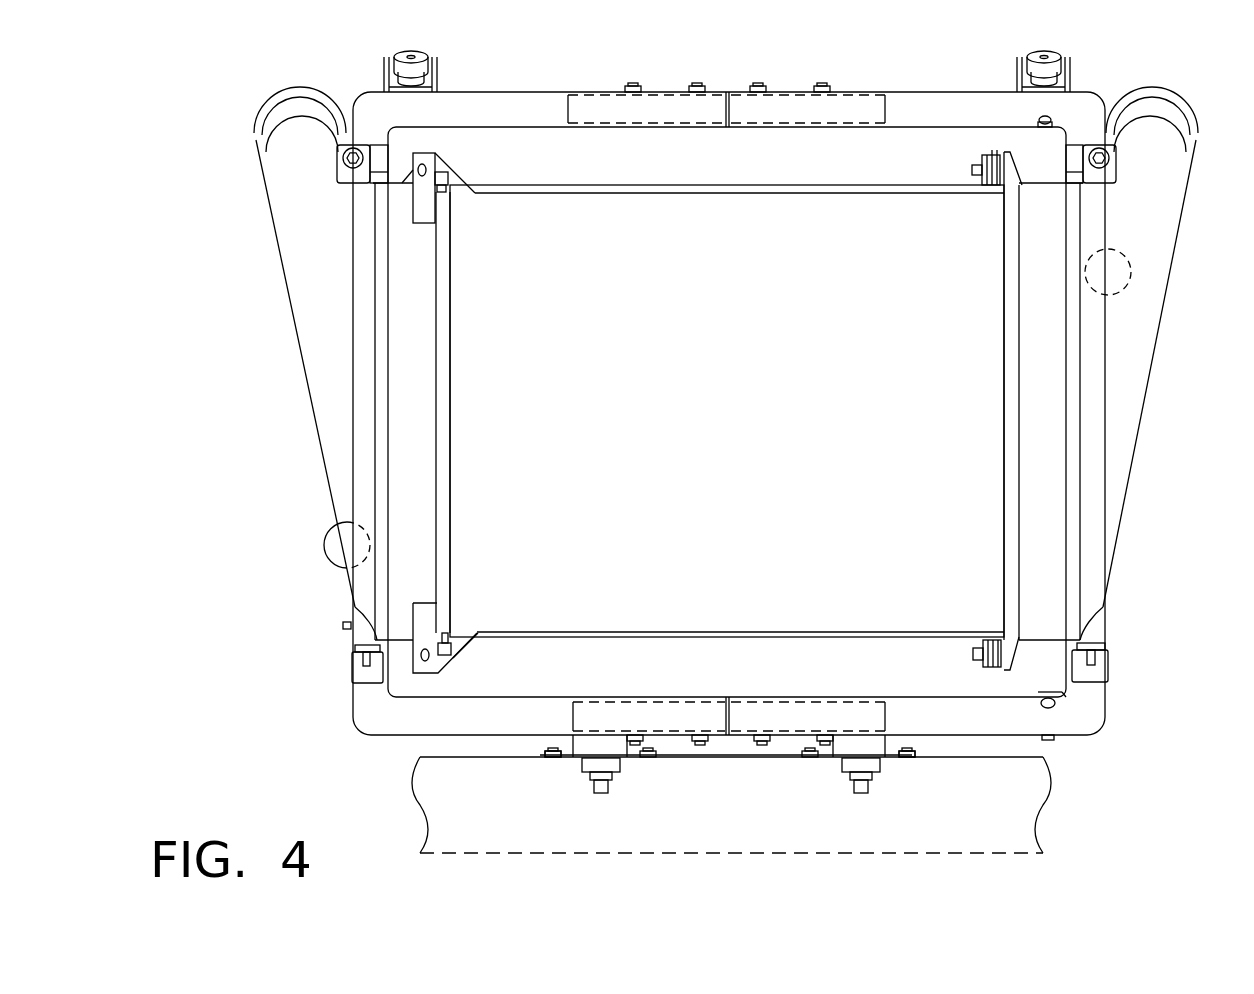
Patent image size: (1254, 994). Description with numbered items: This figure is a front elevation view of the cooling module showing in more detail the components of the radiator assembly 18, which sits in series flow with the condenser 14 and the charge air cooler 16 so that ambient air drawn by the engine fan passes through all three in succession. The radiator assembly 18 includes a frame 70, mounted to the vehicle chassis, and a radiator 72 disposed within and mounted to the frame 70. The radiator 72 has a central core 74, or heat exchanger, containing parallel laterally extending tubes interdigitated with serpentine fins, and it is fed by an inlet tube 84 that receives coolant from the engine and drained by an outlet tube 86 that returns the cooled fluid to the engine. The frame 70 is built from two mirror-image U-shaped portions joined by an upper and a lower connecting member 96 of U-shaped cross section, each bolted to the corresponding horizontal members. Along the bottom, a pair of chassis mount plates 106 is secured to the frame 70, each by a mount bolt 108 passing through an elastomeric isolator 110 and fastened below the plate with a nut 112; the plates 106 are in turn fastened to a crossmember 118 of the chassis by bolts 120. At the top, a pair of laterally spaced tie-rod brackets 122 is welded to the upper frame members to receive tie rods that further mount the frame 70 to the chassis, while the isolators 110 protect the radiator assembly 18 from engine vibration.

The condenser 14 is at (1022, 462).
The charge air cooler 16 is at (1143, 415).
The radiator assembly 18 is at (985, 88).
The frame 70 is at (485, 92).
The radiator 72 is at (796, 138).
The central core 74 is at (676, 230).
The inlet tube 84 is at (1122, 250).
The outlet tube 86 is at (325, 560).
The connecting members 96 is at (596, 88).
The chassis mount plates 106 is at (562, 757).
The mount bolt 108 is at (600, 793).
The elastomeric isolator 110 is at (616, 765).
The nut 112 is at (590, 780).
The crossmember 118 is at (1052, 792).
The bolts 120 is at (658, 753).
The tie-rod brackets 122 is at (424, 53).